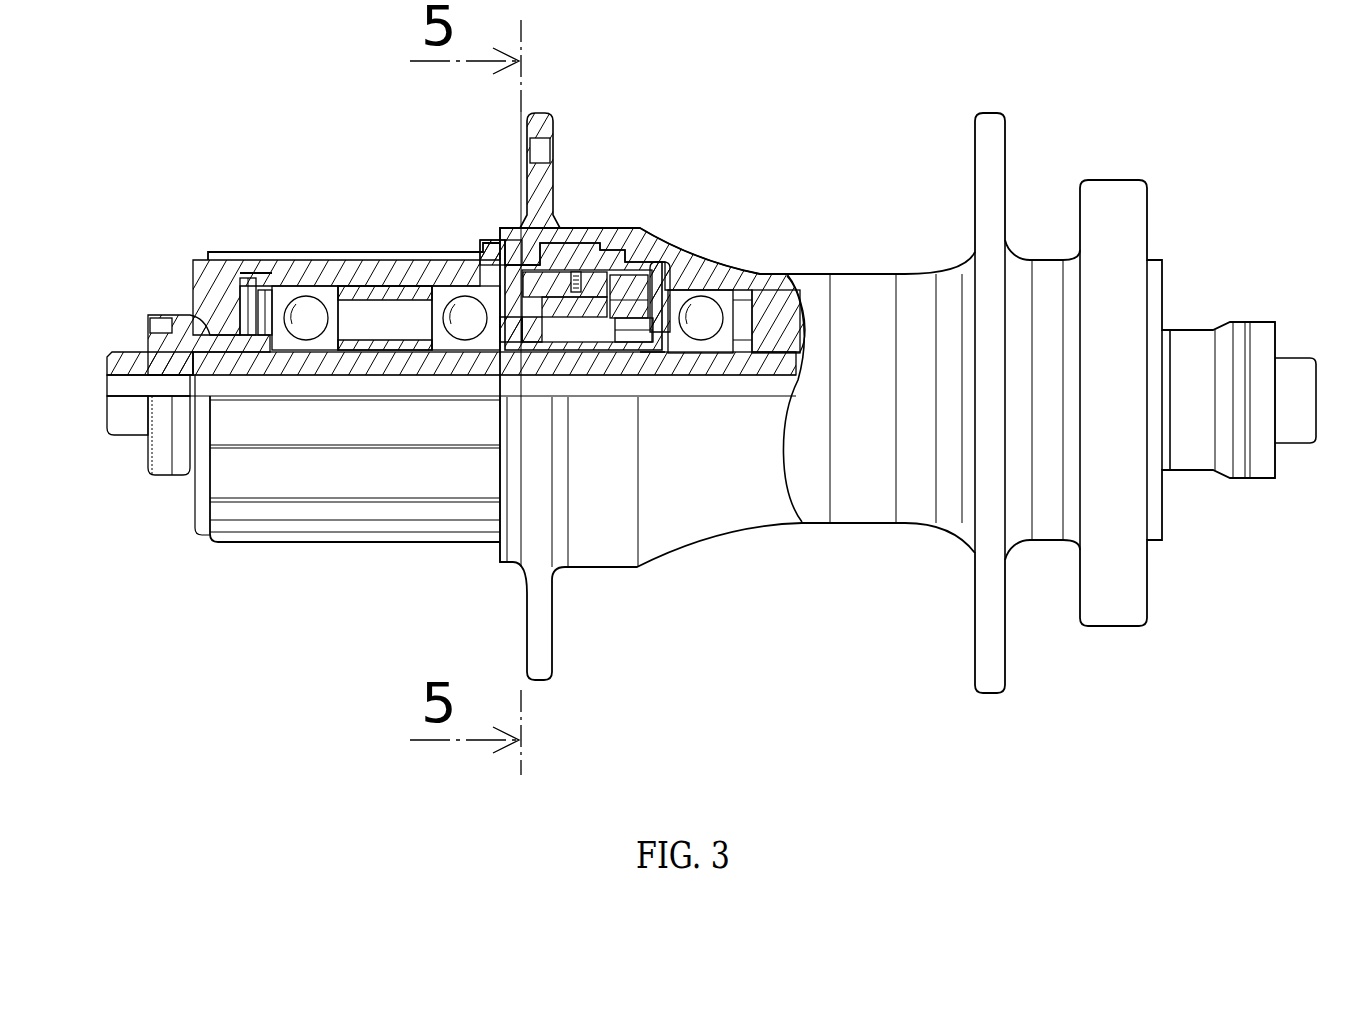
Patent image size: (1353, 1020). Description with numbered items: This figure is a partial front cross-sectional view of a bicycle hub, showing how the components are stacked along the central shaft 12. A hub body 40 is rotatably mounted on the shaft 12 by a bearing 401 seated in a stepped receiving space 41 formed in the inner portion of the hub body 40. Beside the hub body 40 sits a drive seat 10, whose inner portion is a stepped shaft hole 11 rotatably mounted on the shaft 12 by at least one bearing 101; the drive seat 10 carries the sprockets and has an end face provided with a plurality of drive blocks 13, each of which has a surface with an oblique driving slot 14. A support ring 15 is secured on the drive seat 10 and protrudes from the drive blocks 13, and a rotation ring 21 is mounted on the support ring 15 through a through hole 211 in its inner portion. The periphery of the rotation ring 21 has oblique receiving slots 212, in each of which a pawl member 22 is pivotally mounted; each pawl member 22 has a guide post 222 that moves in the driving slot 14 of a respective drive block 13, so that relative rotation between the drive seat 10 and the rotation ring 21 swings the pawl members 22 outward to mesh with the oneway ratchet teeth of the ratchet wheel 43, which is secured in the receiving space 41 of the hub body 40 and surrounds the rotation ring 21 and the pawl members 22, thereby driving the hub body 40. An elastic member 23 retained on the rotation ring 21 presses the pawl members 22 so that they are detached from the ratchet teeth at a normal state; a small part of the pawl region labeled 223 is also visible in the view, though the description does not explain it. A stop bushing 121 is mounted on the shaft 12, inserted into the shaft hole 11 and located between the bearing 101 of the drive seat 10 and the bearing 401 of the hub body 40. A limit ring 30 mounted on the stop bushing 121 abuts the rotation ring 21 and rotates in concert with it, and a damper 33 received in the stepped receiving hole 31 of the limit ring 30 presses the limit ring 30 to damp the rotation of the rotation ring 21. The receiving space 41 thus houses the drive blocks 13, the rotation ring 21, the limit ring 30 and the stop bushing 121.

The drive seat 10 is at (309, 544).
The stepped shaft hole 11 is at (530, 345).
The shaft 12 is at (208, 334).
The stop bushing 121 is at (655, 352).
The drive blocks 13 is at (505, 248).
The oblique driving slot 14 is at (470, 262).
The support ring 15 is at (542, 345).
The rotation ring 21 is at (632, 274).
The through hole 211 is at (553, 340).
The receiving slots 212 is at (607, 285).
The pawl members 22 is at (600, 290).
The guide post 222 is at (500, 250).
The spring 223 is at (573, 290).
The elastic member 23 is at (575, 296).
The limit ring 30 is at (703, 290).
The stepped receiving hole 31 is at (602, 345).
The damper 33 is at (617, 345).
The hub body 40 is at (727, 546).
The bearing 401 is at (752, 253).
The stepped receiving space 41 is at (668, 280).
The ratchet wheel 43 is at (520, 242).
The bearing 101 is at (283, 259).